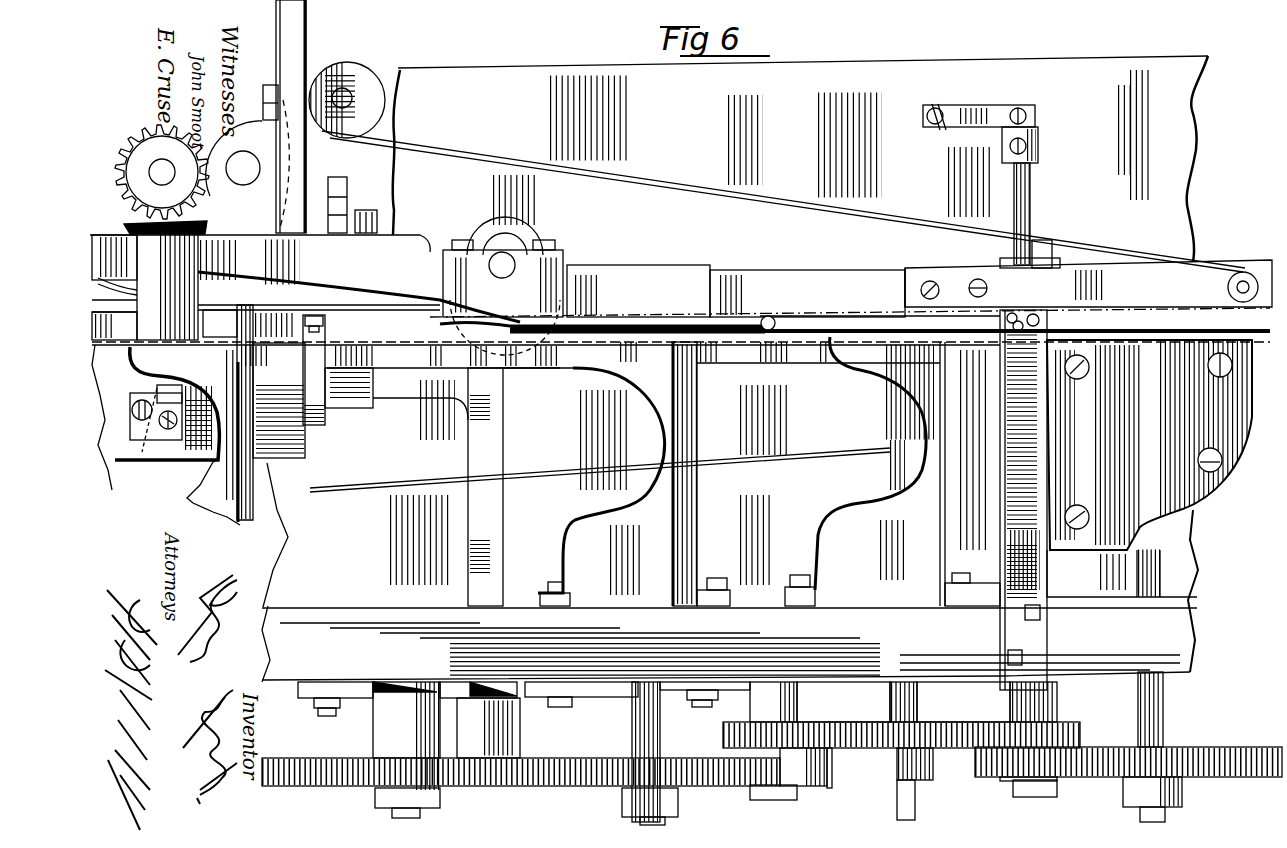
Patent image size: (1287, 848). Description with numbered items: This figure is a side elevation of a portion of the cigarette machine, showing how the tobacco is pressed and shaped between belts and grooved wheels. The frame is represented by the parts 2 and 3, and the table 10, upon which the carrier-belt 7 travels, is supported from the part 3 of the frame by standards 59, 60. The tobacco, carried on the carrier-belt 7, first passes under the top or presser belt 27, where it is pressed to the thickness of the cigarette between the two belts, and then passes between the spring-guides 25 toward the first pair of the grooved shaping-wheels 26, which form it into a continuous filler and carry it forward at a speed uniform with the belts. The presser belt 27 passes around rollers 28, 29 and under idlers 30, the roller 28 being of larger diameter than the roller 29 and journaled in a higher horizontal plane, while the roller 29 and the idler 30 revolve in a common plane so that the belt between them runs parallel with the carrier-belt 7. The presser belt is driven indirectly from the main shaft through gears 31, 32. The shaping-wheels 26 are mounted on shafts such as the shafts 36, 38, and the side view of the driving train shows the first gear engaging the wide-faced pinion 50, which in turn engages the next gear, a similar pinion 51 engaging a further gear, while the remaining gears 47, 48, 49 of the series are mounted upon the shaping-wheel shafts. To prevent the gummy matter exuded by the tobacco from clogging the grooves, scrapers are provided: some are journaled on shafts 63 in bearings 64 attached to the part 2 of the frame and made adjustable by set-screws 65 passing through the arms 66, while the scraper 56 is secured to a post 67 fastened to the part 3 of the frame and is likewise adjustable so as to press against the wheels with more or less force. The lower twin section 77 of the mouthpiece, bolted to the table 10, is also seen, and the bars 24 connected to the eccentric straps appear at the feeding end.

The frame 2 is at (800, 159).
The frame 3 is at (729, 644).
The carrier-belt 7 is at (758, 432).
The table 10 is at (681, 416).
The bars 24 is at (211, 533).
The spring-guides 25 is at (268, 318).
The shaping-wheels 26 is at (668, 318).
The top or presser belt 27 is at (602, 172).
The roller 28 is at (265, 185).
The roller 29 is at (1088, 283).
The idler 30 is at (532, 230).
The gear 31 is at (182, 148).
The gear 32 is at (208, 218).
The shaft 36 is at (664, 740).
The shaft 38 is at (1138, 690).
The gear 47 is at (1178, 748).
The gear 48 is at (963, 722).
The gear 49 is at (608, 757).
The wide-faced pinion 50 is at (824, 776).
The block 51 is at (1004, 778).
The scraper 56 is at (952, 360).
The standard 59 is at (1122, 591).
The standard 60 is at (459, 460).
The shaft 63 is at (1033, 222).
The bearing 64 is at (1040, 157).
The set-screw 65 is at (937, 127).
The arm 66 is at (988, 112).
The post 67 is at (1043, 466).
The lower twin section 77 is at (220, 323).